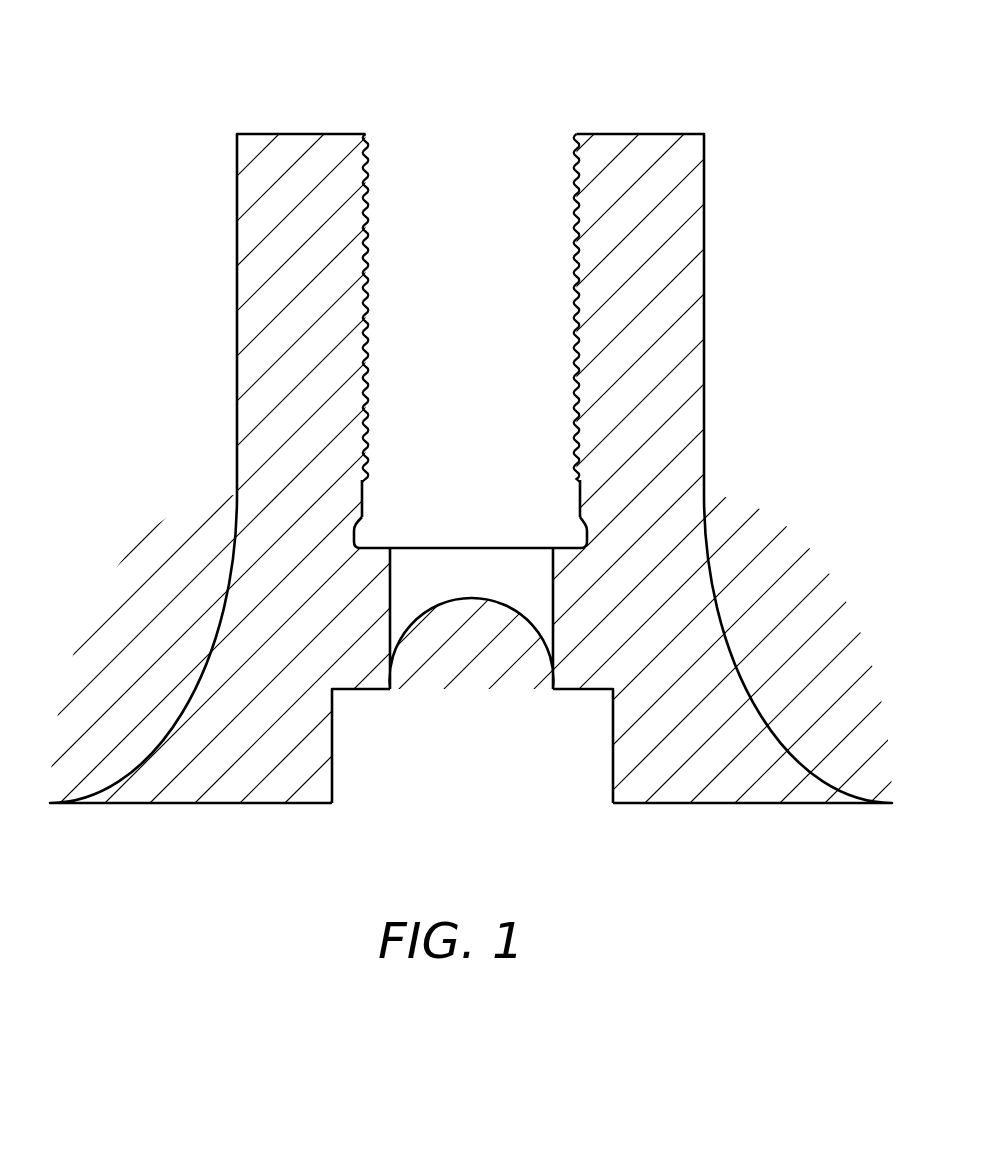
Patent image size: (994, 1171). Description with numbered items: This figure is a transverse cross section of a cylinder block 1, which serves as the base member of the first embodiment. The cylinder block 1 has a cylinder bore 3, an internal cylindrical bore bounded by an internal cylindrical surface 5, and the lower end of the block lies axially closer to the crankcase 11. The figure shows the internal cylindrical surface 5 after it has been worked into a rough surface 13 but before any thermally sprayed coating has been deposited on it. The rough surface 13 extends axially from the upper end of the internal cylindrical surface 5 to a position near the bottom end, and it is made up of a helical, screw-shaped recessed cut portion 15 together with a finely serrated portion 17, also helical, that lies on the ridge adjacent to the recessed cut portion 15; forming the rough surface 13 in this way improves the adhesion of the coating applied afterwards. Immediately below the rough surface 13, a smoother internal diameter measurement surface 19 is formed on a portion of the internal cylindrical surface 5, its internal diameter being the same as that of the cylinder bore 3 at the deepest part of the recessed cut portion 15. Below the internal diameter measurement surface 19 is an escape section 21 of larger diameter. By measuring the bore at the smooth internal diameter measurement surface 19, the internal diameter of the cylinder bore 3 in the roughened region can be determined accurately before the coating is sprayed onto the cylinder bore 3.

The cylinder block 1 is at (705, 187).
The cylinder bore 3 is at (461, 277).
The internal cylindrical surface 5 is at (515, 165).
The crankcase 11 is at (490, 769).
The rough surface 13 is at (358, 57).
The recessed cut portion 15 is at (368, 163).
The serrated portion 17 is at (369, 185).
The internal diameter measurement surface 19 is at (362, 492).
The escape section 21 is at (355, 535).